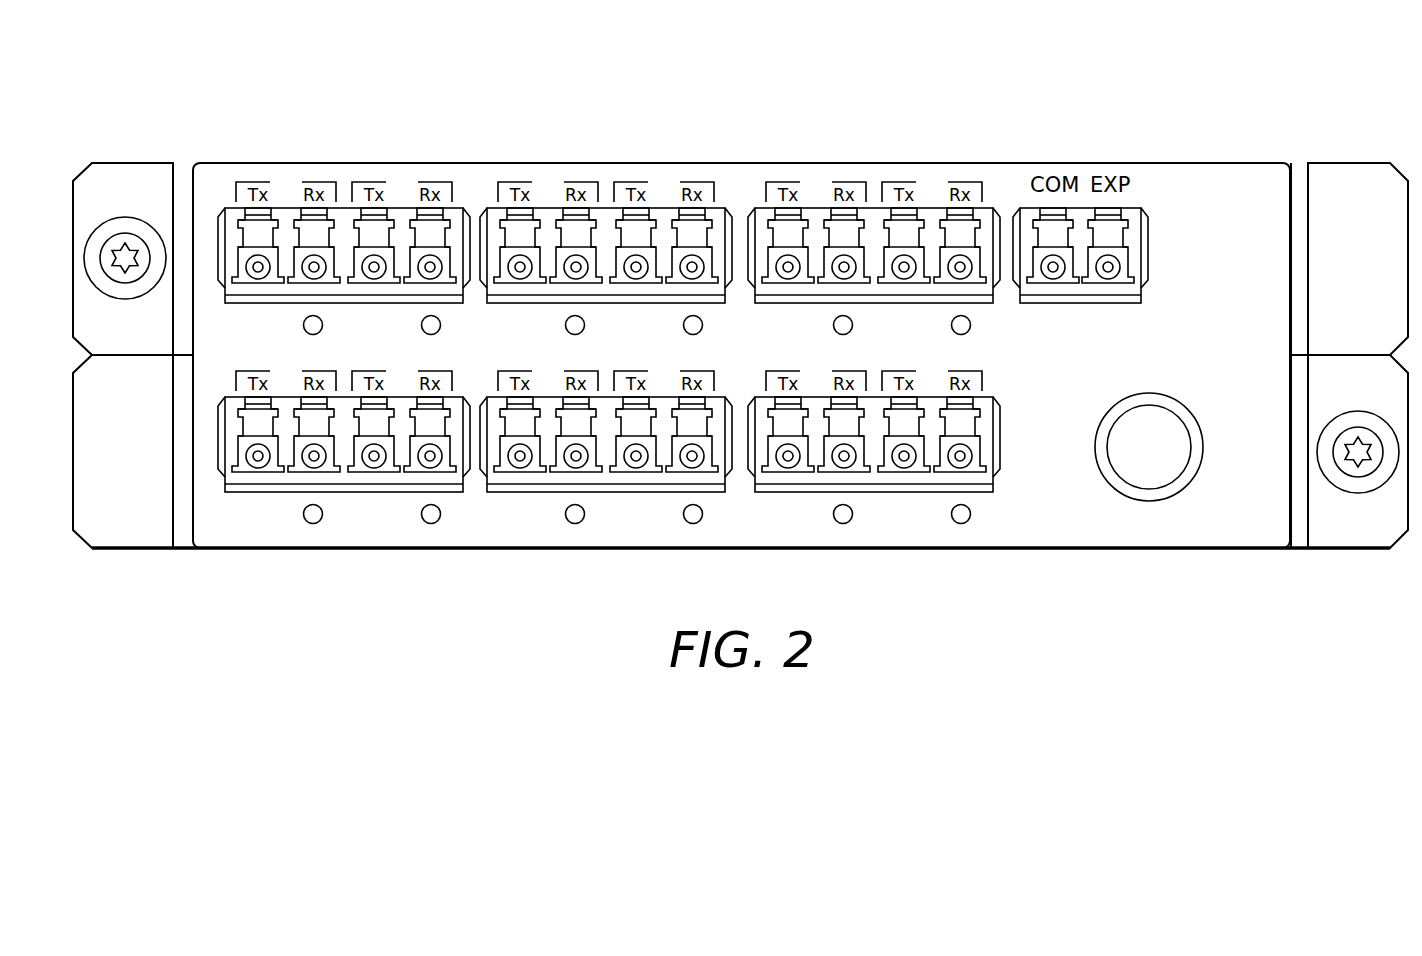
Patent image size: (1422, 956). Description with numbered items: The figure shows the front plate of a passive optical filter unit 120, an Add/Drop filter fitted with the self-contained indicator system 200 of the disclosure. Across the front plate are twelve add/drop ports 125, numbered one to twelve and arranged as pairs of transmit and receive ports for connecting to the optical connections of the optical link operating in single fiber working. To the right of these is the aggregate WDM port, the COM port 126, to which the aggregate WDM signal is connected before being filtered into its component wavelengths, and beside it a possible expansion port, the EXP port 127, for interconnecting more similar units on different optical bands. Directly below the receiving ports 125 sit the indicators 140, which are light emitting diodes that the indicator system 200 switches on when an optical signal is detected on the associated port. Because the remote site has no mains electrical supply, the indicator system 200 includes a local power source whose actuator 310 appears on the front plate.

The passive optical filter unit 120 is at (232, 130).
The indicator system 200 is at (1336, 145).
The ports 125 is at (430, 262).
The COM port 126 is at (1054, 278).
The EXP port 127 is at (1121, 263).
The indicator 140 is at (441, 325).
The actuator 310 is at (1148, 470).